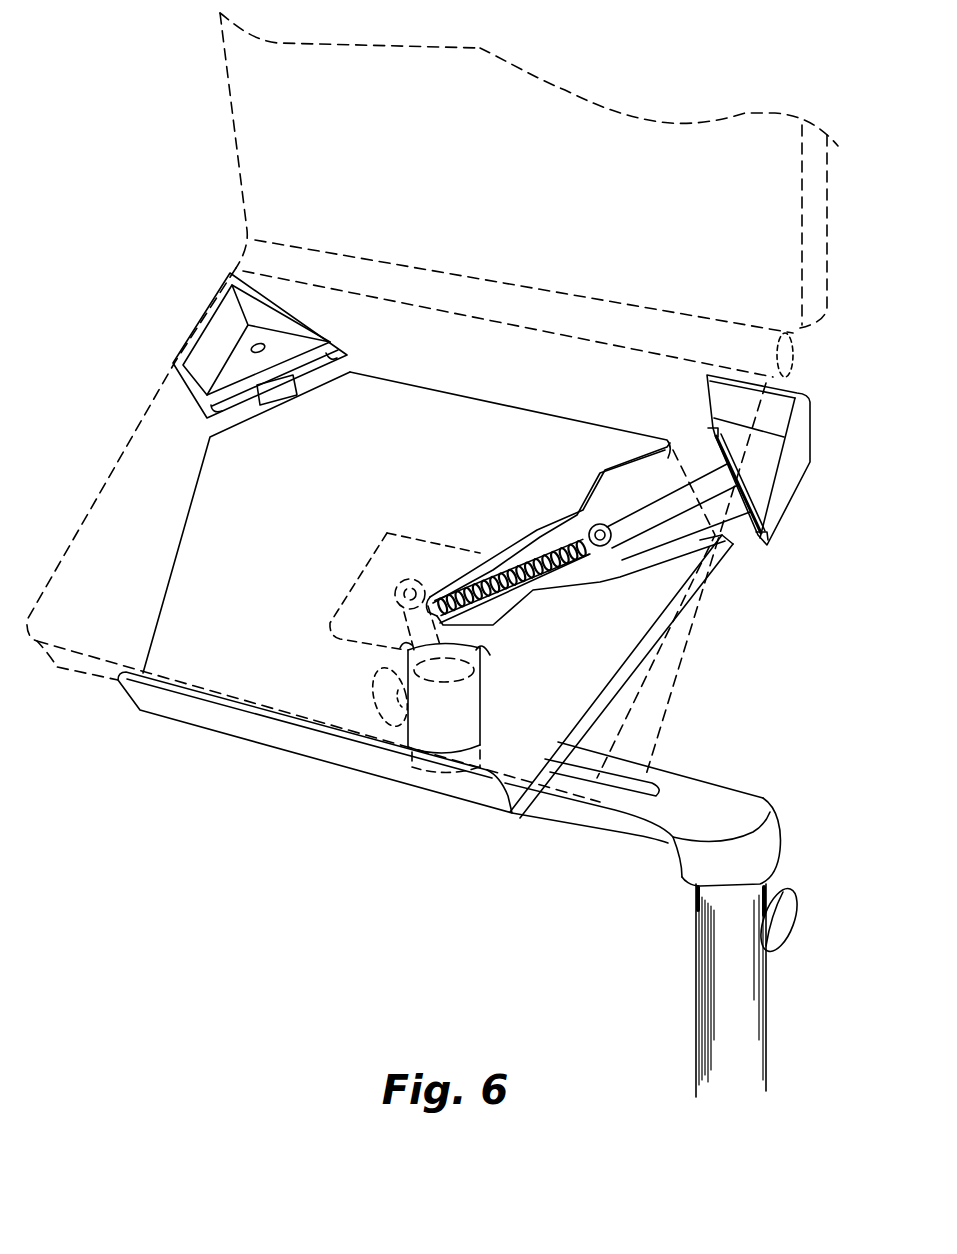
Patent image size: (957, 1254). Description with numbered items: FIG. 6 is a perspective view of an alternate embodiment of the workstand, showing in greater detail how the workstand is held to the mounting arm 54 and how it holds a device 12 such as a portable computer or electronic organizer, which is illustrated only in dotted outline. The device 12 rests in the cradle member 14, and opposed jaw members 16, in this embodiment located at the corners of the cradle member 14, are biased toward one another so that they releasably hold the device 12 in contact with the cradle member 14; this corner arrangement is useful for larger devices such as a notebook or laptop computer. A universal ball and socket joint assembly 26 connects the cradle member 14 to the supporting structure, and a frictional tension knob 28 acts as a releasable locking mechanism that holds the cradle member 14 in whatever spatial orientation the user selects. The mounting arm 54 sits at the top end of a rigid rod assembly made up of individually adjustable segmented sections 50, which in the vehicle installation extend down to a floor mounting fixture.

The device 12 is at (270, 177).
The cradle member 14 is at (706, 587).
The jaw members 16 is at (192, 399).
The universal ball and socket joint assembly 26 is at (453, 720).
The frictional tension knob 28 is at (378, 719).
The segmented sections 50 is at (697, 970).
The mounting arm 54 is at (720, 781).